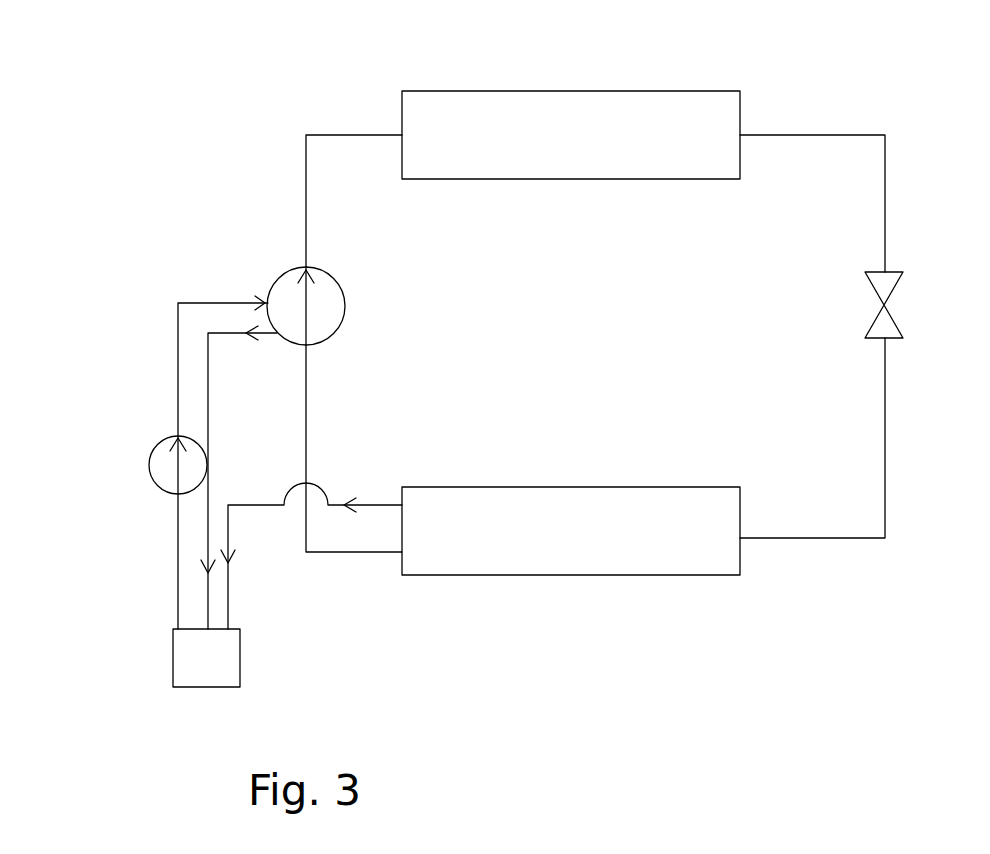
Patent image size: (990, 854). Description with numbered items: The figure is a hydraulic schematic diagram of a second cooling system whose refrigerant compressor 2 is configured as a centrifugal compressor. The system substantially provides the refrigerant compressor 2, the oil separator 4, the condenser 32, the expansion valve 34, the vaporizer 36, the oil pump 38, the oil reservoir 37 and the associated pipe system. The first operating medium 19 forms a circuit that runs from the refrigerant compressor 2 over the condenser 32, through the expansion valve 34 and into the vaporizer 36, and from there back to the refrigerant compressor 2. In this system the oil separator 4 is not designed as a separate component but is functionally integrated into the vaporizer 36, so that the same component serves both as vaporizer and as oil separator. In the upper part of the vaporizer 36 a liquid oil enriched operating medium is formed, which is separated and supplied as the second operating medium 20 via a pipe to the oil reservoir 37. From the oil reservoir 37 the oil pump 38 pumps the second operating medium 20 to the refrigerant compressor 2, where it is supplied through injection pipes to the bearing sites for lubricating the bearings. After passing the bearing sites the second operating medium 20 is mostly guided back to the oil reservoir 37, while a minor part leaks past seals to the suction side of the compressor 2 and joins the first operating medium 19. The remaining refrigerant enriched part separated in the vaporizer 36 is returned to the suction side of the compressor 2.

The refrigerant compressor 2 is at (278, 278).
The oil separator 4 is at (473, 500).
The first operating medium 19 is at (304, 167).
The second operating medium 20 is at (253, 508).
The condenser 32 is at (452, 85).
The expansion valve 34 is at (897, 268).
The vaporizer 36 is at (572, 597).
The oil reservoir 37 is at (186, 687).
The oil pump 38 is at (157, 486).